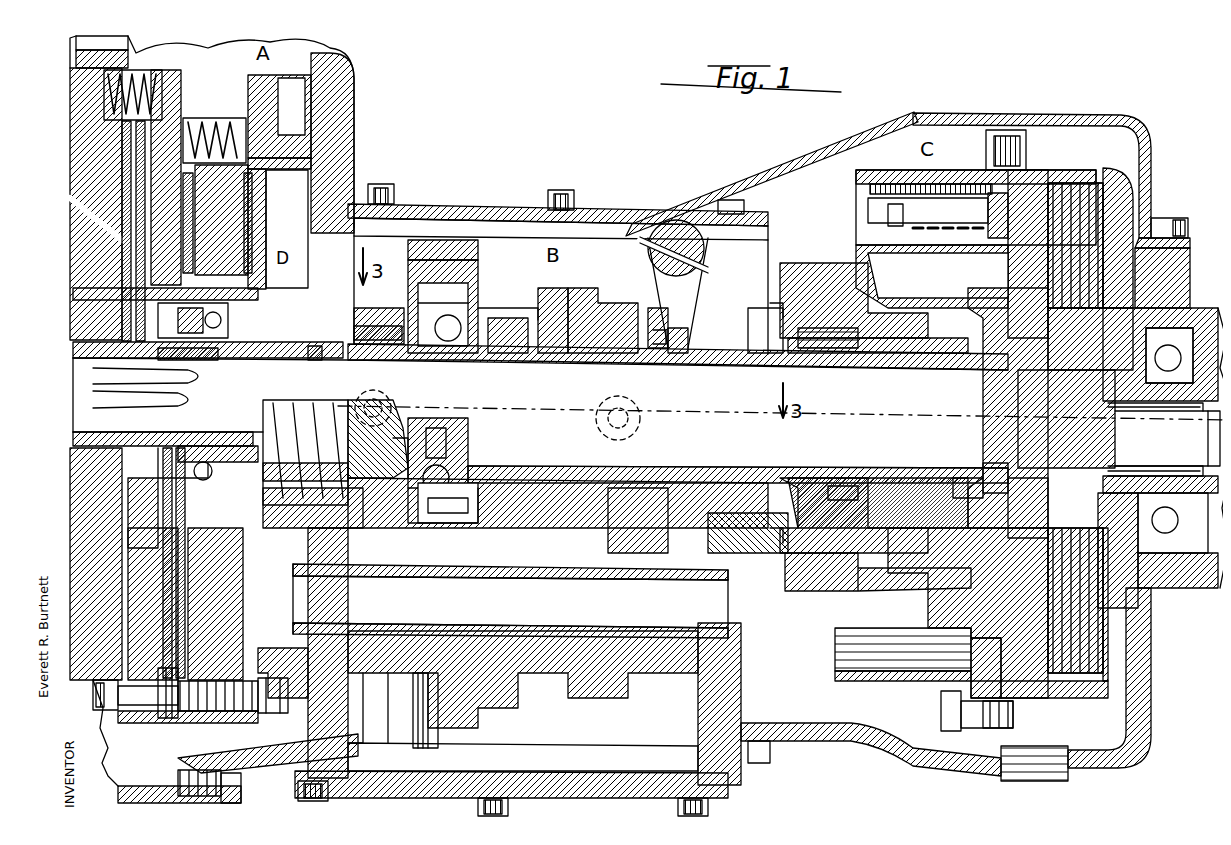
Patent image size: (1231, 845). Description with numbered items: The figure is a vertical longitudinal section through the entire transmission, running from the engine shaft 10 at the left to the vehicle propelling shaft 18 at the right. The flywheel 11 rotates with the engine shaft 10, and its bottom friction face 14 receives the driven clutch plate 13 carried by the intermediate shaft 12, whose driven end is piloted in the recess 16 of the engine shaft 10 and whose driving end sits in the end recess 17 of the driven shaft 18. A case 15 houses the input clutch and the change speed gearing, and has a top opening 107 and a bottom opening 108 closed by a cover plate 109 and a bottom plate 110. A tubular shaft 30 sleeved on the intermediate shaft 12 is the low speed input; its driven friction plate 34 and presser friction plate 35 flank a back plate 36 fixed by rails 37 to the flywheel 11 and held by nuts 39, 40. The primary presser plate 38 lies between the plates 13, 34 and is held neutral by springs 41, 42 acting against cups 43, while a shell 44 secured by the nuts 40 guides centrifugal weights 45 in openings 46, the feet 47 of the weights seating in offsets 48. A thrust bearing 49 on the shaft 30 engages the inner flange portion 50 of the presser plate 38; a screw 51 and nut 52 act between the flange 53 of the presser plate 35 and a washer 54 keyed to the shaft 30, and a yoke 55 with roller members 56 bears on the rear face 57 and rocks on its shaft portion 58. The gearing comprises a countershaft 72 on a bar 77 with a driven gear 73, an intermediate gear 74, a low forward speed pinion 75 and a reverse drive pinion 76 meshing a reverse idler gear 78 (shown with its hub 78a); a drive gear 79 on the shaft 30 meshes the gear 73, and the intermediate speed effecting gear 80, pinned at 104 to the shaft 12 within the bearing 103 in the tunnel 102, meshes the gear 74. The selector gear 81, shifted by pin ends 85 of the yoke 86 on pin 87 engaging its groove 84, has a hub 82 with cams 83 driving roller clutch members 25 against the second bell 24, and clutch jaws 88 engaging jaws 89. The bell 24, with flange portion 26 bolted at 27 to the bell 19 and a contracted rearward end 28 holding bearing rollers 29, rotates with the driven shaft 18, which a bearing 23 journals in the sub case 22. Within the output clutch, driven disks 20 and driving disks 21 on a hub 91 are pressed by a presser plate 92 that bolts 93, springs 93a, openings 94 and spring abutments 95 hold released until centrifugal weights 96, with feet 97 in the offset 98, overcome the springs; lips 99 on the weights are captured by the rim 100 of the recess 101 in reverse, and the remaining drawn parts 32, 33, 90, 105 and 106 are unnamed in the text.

The engine shaft 10 is at (212, 411).
The engine flywheel 11 is at (118, 42).
The intermediate shaft 12 is at (648, 417).
The driven clutch plate 13 is at (115, 706).
The bottom friction face 14 is at (133, 85).
The case 15 is at (346, 160).
The recess 16 is at (143, 385).
The end recess 17 is at (1160, 392).
The vehicle propelling shaft 18 is at (1170, 458).
The bell 19 is at (1040, 672).
The driven disks 20 is at (1060, 672).
The driving disks 21 is at (1082, 672).
The sub case 22 is at (888, 748).
The bearing 23 is at (1196, 535).
The second bell 24 is at (872, 510).
The roller clutch members 25 is at (760, 335).
The flange portion 26 is at (975, 562).
The bolts 27 is at (1000, 122).
The contracted rearward end 28 is at (1028, 508).
The bearing rollers 29 is at (996, 458).
The tubular-shaped shaft 30 is at (262, 350).
The bearing ring 32 is at (163, 428).
The snap ring 33 is at (318, 352).
The driven friction plate 34 is at (160, 610).
The presser friction plate 35 is at (262, 200).
The back plate 36 is at (200, 703).
The rails 37 is at (150, 710).
The primary presser plate 38 is at (130, 715).
The nut 39 is at (160, 710).
The nut 40 is at (262, 705).
The spring 41 is at (160, 62).
The spring 42 is at (186, 112).
The cups 43 is at (246, 112).
The shell 44 is at (300, 196).
The centrifugal weights 45 is at (316, 80).
The openings 46 is at (280, 70).
The feet 47 is at (287, 229).
The offsets 48 is at (262, 80).
The axial thrust bearing 49 is at (193, 320).
The inner flange portion 50 is at (209, 445).
The screw 51 is at (300, 392).
The nut 52 is at (370, 298).
The flange 53 is at (232, 350).
The washer 54 is at (378, 325).
The yoke 55 is at (472, 256).
The roller members 56 is at (345, 415).
The rear face 57 is at (340, 426).
The shaft portion 58 is at (465, 420).
The countershaft 72 is at (436, 650).
The driven gear 73 is at (352, 716).
The intermediate gear 74 is at (478, 706).
The low forward speed pinion 75 is at (548, 678).
The reverse drive pinion 76 is at (648, 665).
The bar 77 is at (510, 601).
The reverse idler gear 78 is at (660, 510).
The gear hub 78a is at (625, 535).
The drive gear 79 is at (382, 312).
The intermediate speed effecting gear 80 is at (500, 310).
The forward and reverse drive selector gear 81 is at (578, 282).
The hub 82 is at (698, 345).
The cams 83 is at (825, 345).
The groove 84 is at (598, 490).
The pin ends 85 is at (630, 420).
The yoke 86 is at (650, 268).
The pin 87 is at (685, 262).
The clutch jaws 88 is at (855, 482).
The jaws 89 is at (958, 480).
The clutch plates 90 is at (1080, 175).
The hub 91 is at (1060, 322).
The presser plate 92 is at (1028, 280).
The bolts 93 is at (976, 207).
The springs 93a is at (930, 222).
The openings 94 is at (960, 632).
The spring abutments 95 is at (885, 218).
The centrifugal weights 96 is at (790, 262).
The feet 97 is at (985, 272).
The offset 98 is at (991, 445).
The lips 99 is at (770, 295).
The rim 100 is at (660, 310).
The recess 101 is at (652, 336).
The tunnel 102 is at (475, 262).
The bearing 103 is at (475, 282).
The pin 104 is at (470, 406).
The collar 105 is at (556, 309).
The housing wall 106 is at (295, 680).
The top opening 107 is at (561, 229).
The bottom opening 108 is at (523, 758).
The cover plate 109 is at (498, 200).
The bottom plate 110 is at (560, 782).